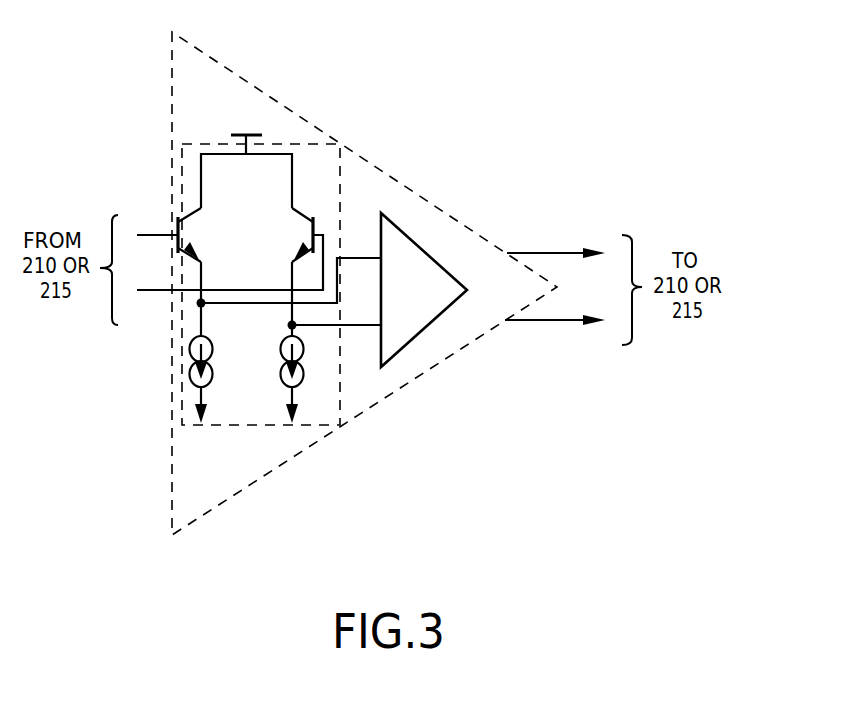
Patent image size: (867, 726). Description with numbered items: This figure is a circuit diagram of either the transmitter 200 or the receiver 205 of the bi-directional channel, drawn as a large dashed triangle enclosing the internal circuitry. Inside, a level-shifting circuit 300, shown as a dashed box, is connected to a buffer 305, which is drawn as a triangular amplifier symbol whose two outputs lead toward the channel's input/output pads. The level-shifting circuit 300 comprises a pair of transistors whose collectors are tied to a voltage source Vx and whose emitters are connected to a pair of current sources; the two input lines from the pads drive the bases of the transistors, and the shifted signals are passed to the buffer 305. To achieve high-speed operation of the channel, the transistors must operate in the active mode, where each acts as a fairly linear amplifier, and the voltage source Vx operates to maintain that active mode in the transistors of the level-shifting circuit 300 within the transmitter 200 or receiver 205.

The transmitter 200 is at (402, 273).
The receiver 205 is at (402, 273).
The level-shifting circuit 300 is at (343, 177).
The buffer 305 is at (418, 242).